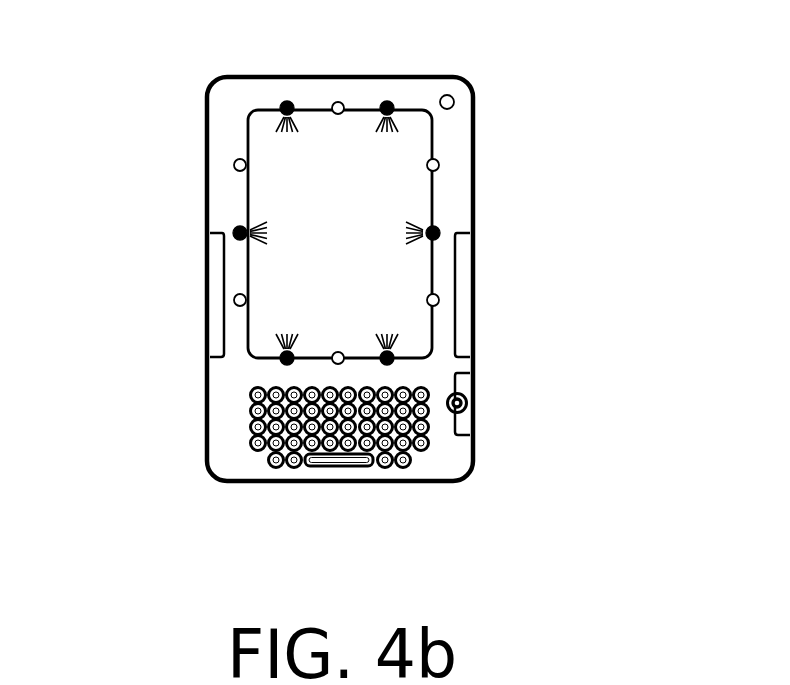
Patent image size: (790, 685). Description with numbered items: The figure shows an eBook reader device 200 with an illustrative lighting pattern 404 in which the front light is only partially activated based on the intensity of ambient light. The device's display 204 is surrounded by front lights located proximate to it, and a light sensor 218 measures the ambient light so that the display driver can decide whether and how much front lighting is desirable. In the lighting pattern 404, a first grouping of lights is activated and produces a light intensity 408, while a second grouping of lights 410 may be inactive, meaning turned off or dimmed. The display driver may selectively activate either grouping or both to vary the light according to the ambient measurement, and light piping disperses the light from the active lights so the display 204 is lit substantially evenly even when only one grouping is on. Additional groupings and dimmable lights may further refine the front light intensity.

The eBook reader device 200 is at (238, 74).
The display 204 is at (433, 135).
The light sensor 218 is at (453, 99).
The lighting pattern 404 is at (621, 102).
The light intensity 408 is at (272, 215).
The second grouping of lights 410 is at (438, 297).